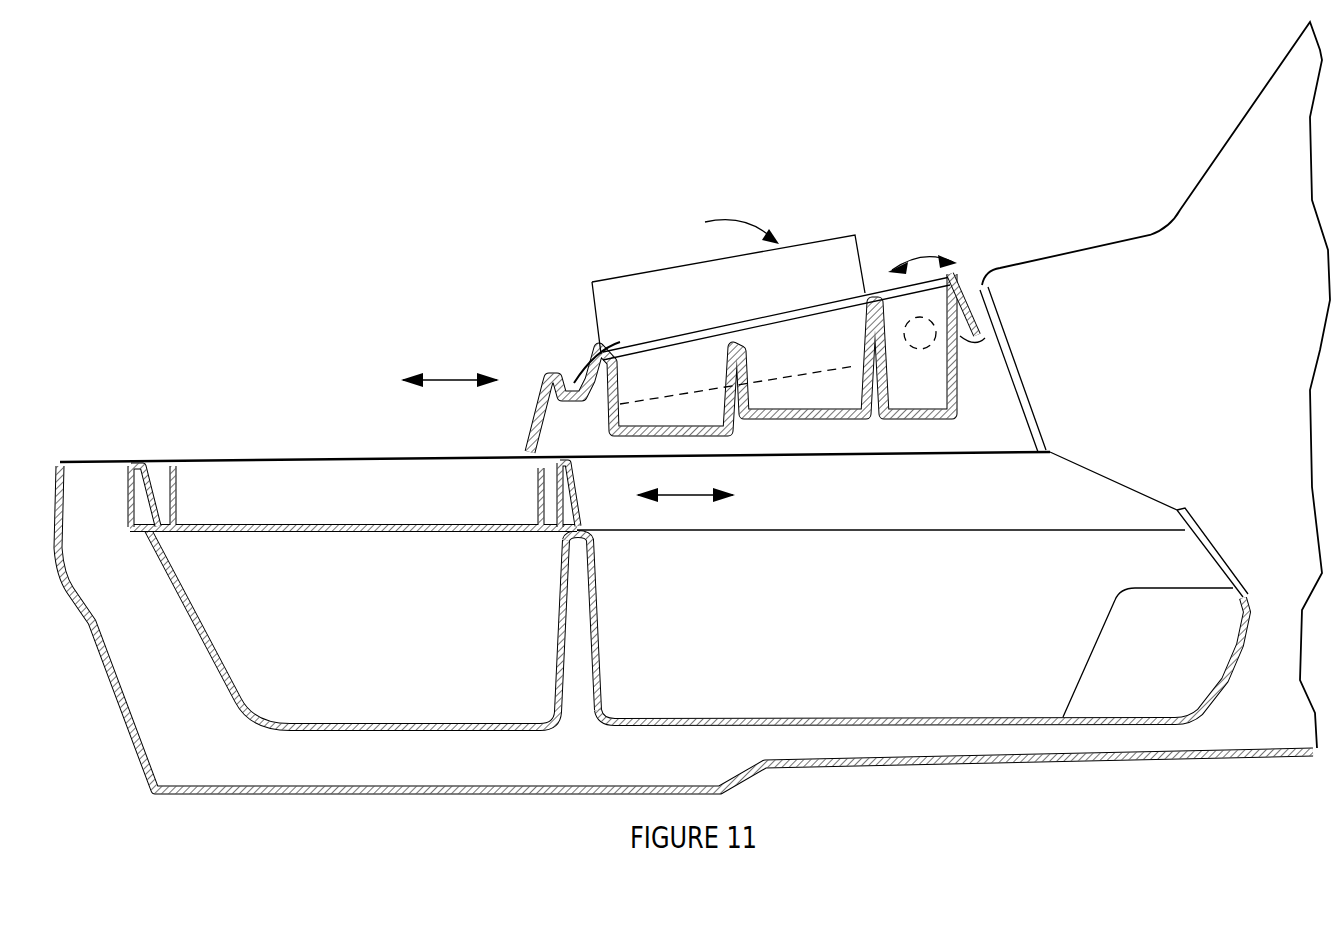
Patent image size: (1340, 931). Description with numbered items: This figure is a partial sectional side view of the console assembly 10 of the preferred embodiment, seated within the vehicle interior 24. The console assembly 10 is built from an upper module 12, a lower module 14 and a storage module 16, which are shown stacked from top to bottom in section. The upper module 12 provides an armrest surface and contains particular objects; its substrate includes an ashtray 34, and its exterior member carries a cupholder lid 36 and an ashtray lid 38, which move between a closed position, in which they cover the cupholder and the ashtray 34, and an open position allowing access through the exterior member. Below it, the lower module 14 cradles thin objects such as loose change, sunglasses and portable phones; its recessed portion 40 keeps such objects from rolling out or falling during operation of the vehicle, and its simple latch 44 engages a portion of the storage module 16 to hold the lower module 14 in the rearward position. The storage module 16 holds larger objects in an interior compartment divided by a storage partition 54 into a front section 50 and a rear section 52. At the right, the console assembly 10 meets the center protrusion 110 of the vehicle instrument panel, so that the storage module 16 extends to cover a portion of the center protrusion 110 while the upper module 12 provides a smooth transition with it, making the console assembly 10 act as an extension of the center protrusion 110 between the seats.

The console assembly 10 is at (512, 226).
The upper module 12 is at (535, 377).
The lower module 14 is at (353, 440).
The storage module 16 is at (205, 800).
The vehicle interior 24 is at (358, 342).
The ashtray 34 is at (892, 313).
The cupholder lid 36 is at (807, 243).
The ashtray lid 38 is at (957, 280).
The recessed portion 40 is at (345, 520).
The simple latch 44 is at (178, 499).
The front section 50 is at (753, 670).
The rear section 52 is at (205, 615).
The storage partition 54 is at (598, 645).
The center protrusion 110 is at (1214, 409).